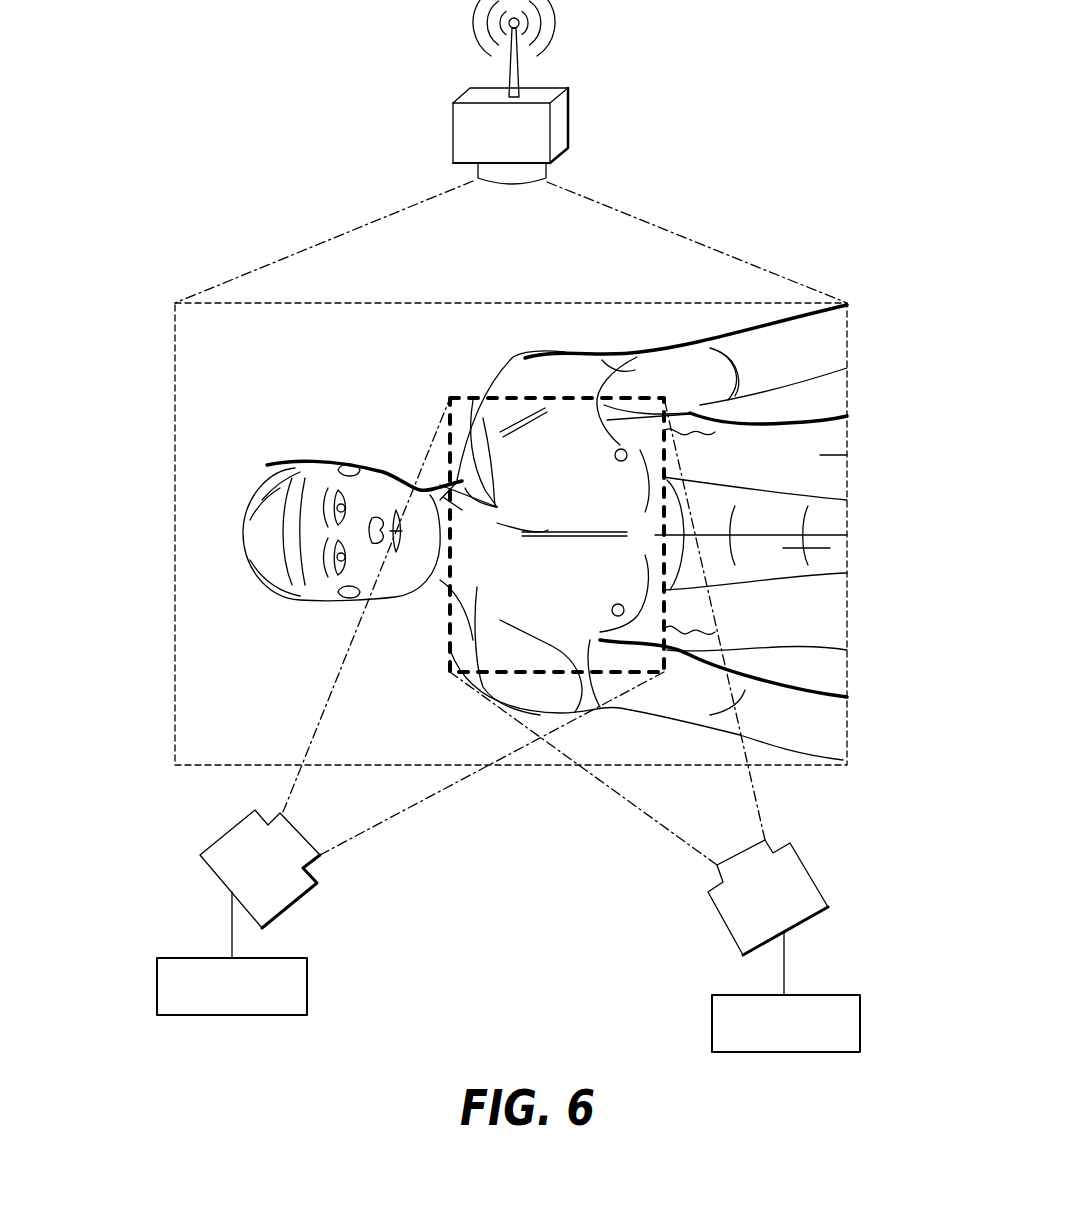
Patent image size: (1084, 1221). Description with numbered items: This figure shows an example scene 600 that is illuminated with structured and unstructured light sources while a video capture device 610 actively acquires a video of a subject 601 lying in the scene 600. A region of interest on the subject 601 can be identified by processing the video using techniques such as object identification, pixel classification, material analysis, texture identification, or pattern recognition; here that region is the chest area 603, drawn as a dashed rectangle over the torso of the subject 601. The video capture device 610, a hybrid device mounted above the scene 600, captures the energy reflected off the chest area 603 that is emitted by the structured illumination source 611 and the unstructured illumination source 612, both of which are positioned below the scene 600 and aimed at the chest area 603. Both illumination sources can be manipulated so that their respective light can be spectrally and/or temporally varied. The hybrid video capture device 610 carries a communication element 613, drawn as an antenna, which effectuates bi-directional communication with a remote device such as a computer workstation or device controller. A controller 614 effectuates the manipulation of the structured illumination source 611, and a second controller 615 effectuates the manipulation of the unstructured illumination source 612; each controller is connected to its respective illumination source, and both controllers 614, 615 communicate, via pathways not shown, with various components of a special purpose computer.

The scene 600 is at (552, 303).
The subject 601 is at (253, 573).
The chest area 603 is at (447, 437).
The video capture device 610 is at (560, 125).
The structured illumination source 611 is at (225, 830).
The unstructured illumination source 612 is at (810, 875).
The communication element 613 is at (520, 70).
The controller 614 is at (308, 987).
The controller 615 is at (712, 1023).